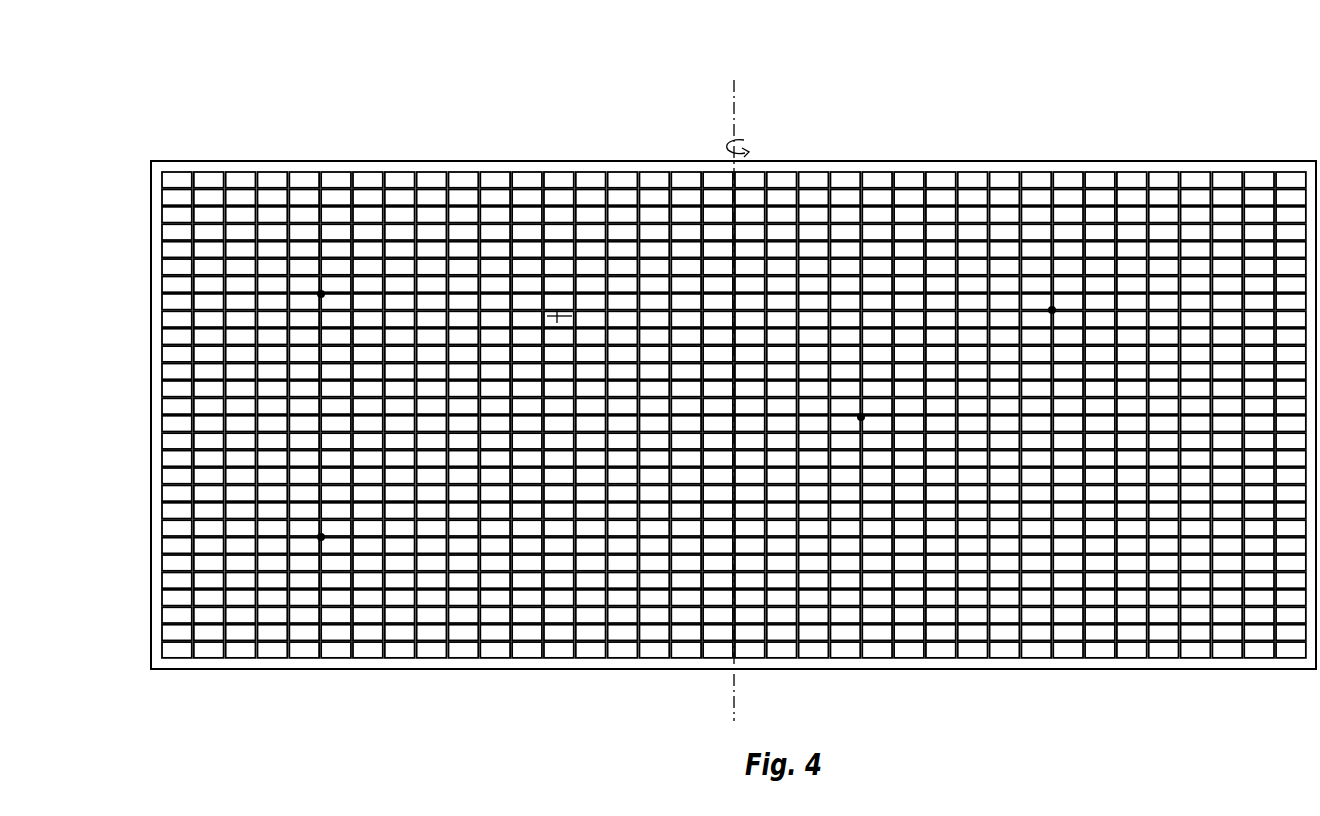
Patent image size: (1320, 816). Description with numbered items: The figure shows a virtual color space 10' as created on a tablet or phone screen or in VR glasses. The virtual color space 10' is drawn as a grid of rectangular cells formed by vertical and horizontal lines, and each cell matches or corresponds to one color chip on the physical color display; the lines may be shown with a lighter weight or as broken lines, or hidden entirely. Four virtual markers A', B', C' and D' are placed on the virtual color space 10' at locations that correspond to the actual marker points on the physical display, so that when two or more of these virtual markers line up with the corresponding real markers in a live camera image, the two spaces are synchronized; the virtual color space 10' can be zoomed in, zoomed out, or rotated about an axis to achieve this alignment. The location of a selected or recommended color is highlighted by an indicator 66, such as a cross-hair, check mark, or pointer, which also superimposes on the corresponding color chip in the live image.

The virtual color space 10' is at (733, 355).
The indicator 66 is at (553, 313).
The virtual marker A' is at (328, 281).
The virtual marker B' is at (1060, 297).
The virtual marker C' is at (328, 523).
The virtual marker D' is at (869, 404).